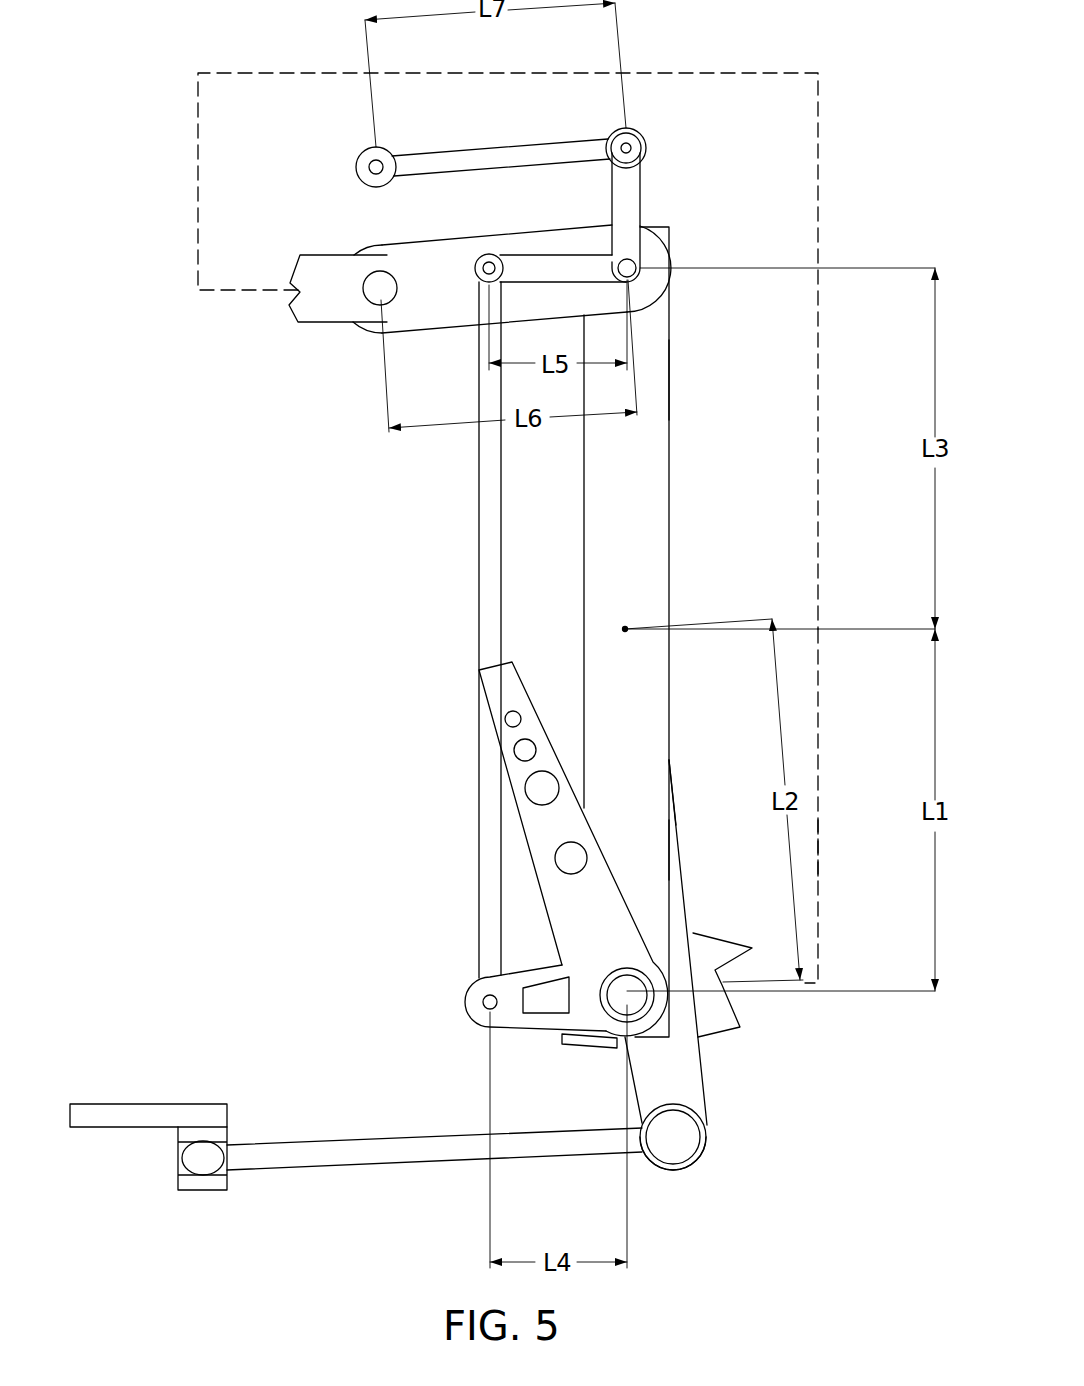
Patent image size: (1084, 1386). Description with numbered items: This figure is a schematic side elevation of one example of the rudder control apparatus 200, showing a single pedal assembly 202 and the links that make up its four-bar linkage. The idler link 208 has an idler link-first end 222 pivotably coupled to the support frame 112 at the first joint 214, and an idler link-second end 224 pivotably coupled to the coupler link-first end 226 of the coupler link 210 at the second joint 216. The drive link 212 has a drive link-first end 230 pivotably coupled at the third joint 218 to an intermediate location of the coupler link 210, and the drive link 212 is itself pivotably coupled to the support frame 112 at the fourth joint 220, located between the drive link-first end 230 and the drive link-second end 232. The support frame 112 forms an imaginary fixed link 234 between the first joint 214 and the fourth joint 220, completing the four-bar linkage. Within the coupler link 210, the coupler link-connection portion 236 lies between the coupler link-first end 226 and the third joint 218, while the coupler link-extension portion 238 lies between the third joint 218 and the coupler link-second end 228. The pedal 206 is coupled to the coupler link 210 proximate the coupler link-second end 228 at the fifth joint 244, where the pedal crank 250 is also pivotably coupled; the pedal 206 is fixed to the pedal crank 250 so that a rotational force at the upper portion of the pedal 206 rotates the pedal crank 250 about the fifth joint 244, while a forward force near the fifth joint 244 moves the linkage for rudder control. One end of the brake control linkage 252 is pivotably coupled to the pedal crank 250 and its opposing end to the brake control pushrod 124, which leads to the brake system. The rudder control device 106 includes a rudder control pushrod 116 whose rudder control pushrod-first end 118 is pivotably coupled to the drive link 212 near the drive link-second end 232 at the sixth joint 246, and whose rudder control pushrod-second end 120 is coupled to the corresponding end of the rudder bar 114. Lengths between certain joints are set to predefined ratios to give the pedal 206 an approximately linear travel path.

The rudder control device 106 is at (103, 1083).
The support frame 112 is at (300, 305).
The rudder bar 114 is at (194, 1193).
The rudder control pushrod 116 is at (560, 1158).
The rudder control pushrod-first end 118 is at (690, 1183).
The rudder control pushrod-second end 120 is at (235, 1210).
The brake control pushrod 124 is at (422, 153).
The rudder control apparatus 200 is at (822, 112).
The pedal assembly 202 is at (822, 665).
The pedal 206 is at (515, 840).
The idler link 208 is at (405, 332).
The coupler link 210 is at (672, 481).
The drive link 212 is at (702, 1077).
The first joint 214 is at (385, 272).
The second joint 216 is at (662, 272).
The third joint 218 is at (625, 627).
The fourth joint 220 is at (669, 992).
The idler link-first end 222 is at (345, 335).
The idler link-second end 224 is at (680, 287).
The coupler link-first end 226 is at (657, 222).
The coupler link-second end 228 is at (583, 1050).
The drive link-first end 230 is at (672, 767).
The drive link-second end 232 is at (712, 1130).
The fixed link 234 is at (822, 846).
The coupler link-connection portion 236 is at (672, 378).
The coupler link-extension portion 238 is at (673, 852).
The fifth joint 244 is at (627, 1003).
The sixth joint 246 is at (678, 1140).
The pedal crank 250 is at (466, 1003).
The brake control linkage 252 is at (467, 542).